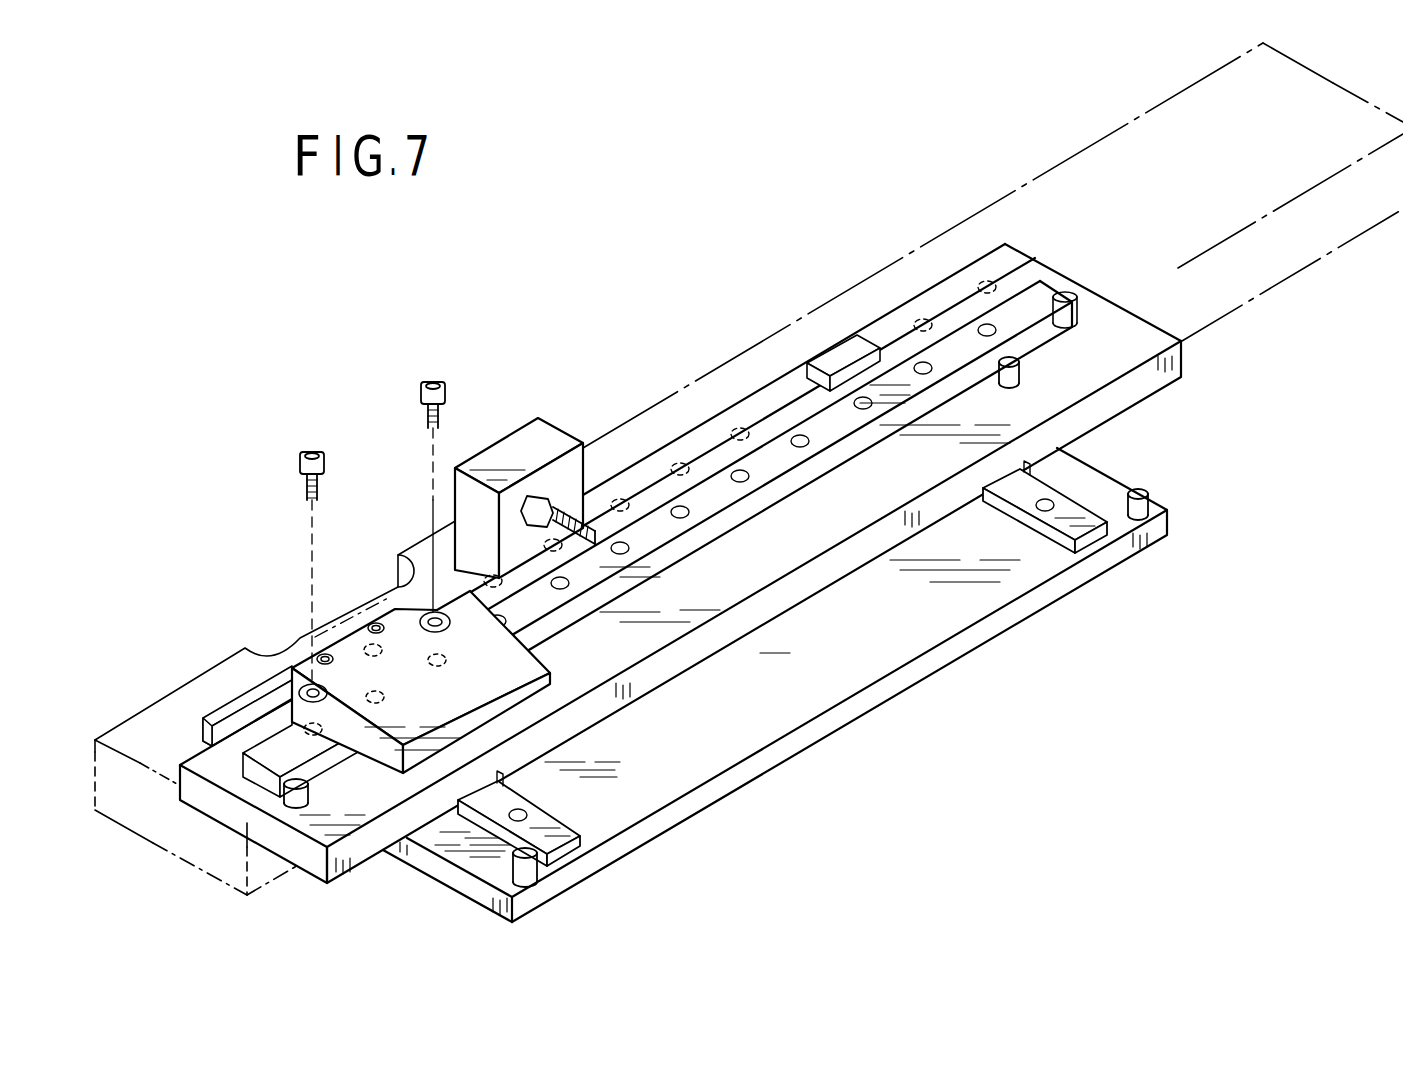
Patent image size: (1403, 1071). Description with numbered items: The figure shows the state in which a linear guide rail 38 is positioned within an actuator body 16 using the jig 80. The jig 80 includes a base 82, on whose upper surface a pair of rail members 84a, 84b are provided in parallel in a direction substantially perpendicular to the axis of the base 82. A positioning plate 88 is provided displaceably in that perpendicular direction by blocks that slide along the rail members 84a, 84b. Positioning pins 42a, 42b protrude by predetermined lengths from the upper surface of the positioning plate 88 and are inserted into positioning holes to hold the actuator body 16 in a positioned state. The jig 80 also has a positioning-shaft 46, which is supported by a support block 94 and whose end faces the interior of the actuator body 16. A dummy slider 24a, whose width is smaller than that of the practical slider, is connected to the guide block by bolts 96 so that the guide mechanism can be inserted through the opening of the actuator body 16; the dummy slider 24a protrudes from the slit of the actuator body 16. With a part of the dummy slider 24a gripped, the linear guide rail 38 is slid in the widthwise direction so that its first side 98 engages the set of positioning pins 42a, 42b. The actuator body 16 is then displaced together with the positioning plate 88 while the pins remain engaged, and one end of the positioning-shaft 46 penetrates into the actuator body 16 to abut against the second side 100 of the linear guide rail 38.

The actuator body 16 is at (952, 228).
The dummy slider 24a is at (432, 705).
The linear guide rail 38 is at (777, 457).
The positioning pin 42a is at (296, 806).
The positioning pin 42b is at (1017, 378).
The positioning-shaft 46 is at (567, 512).
The jig 80 is at (803, 758).
The base 82 is at (890, 640).
The rail member 84a is at (503, 805).
The rail member 84b is at (1030, 492).
The positioning plate 88 is at (712, 586).
The support block 94 is at (500, 443).
The bolts 96 is at (312, 452).
The first side 98 is at (740, 512).
The second side 100 is at (720, 469).